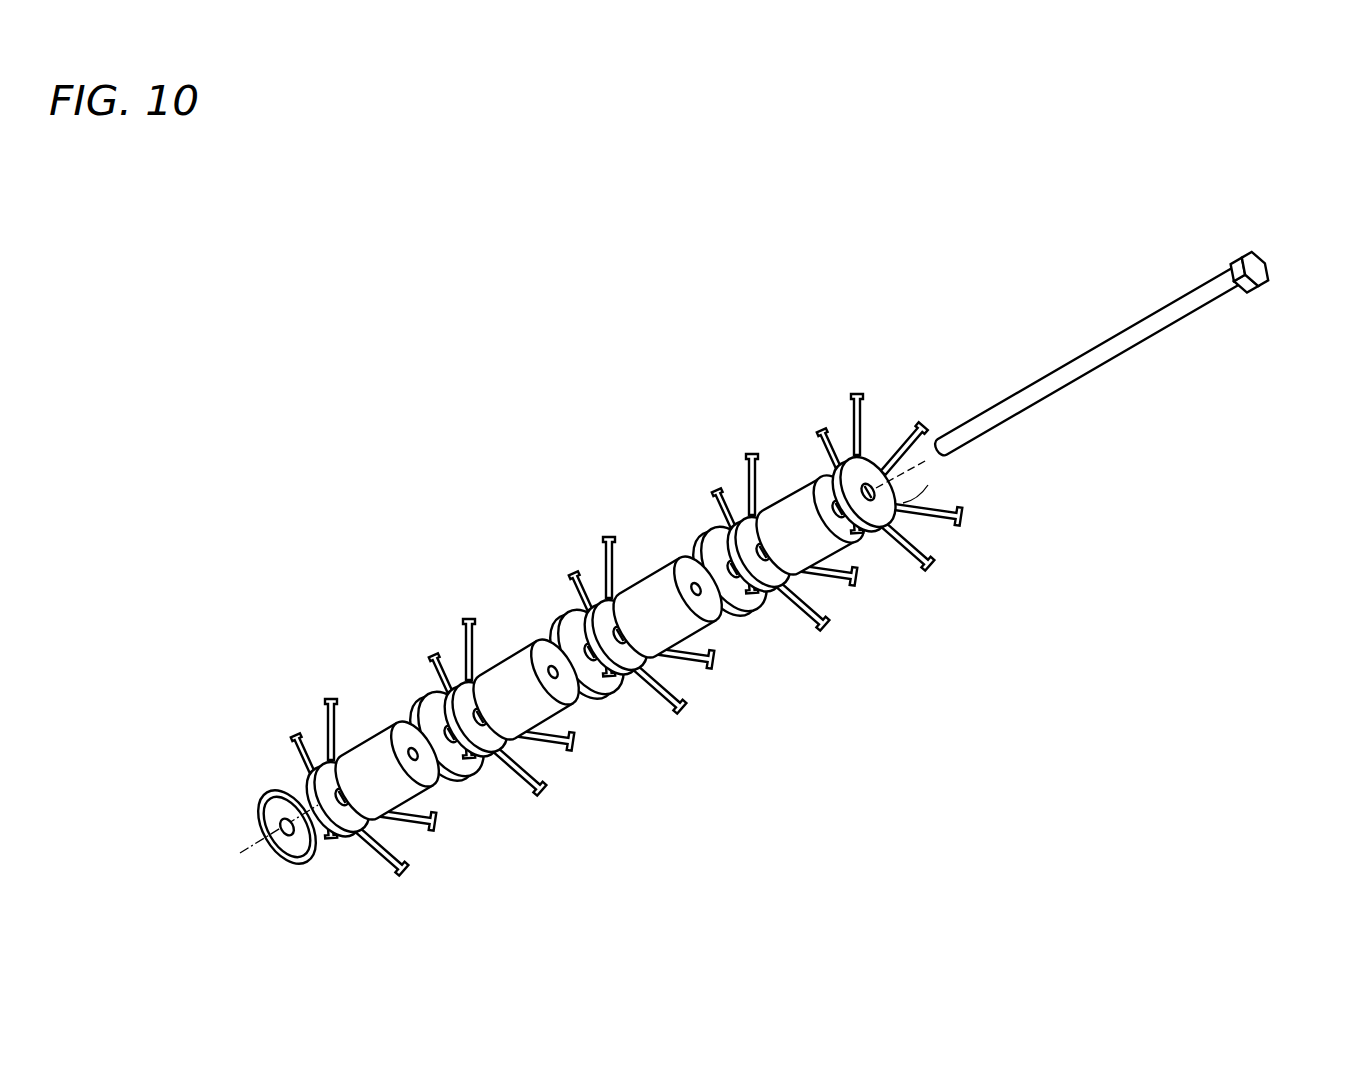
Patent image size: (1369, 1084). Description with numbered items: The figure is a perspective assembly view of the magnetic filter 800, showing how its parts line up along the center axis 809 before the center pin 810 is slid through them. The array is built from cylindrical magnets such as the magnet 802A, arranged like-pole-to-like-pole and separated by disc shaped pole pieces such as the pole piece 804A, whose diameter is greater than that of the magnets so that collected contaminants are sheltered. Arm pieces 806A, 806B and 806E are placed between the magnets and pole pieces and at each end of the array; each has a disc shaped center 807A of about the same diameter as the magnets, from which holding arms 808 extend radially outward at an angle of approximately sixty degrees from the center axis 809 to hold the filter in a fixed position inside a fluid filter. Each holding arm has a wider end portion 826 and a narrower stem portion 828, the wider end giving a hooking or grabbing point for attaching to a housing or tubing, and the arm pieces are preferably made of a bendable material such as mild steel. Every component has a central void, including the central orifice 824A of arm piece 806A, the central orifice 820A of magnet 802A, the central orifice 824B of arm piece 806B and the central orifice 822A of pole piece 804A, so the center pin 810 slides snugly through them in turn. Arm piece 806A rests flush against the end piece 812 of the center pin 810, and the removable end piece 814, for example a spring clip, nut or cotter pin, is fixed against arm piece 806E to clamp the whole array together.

The magnetic filter 800 is at (725, 258).
The magnet 802A is at (812, 497).
The pole piece 804A is at (743, 617).
The arm piece 806A is at (889, 467).
The arm piece 806B is at (754, 549).
The arm piece 806E is at (334, 868).
The disc shaped center 807A is at (900, 493).
The holding arms 808 is at (930, 481).
The center axis 809 is at (250, 847).
The center pin 810 is at (1135, 290).
The end piece 812 is at (1268, 270).
The removable end piece 814 is at (273, 790).
The central void 820A is at (792, 517).
The central void 822A is at (702, 553).
The central void 824A is at (892, 475).
The central void 824B is at (797, 590).
The end portion 826 is at (930, 563).
The stem portion 828 is at (850, 420).